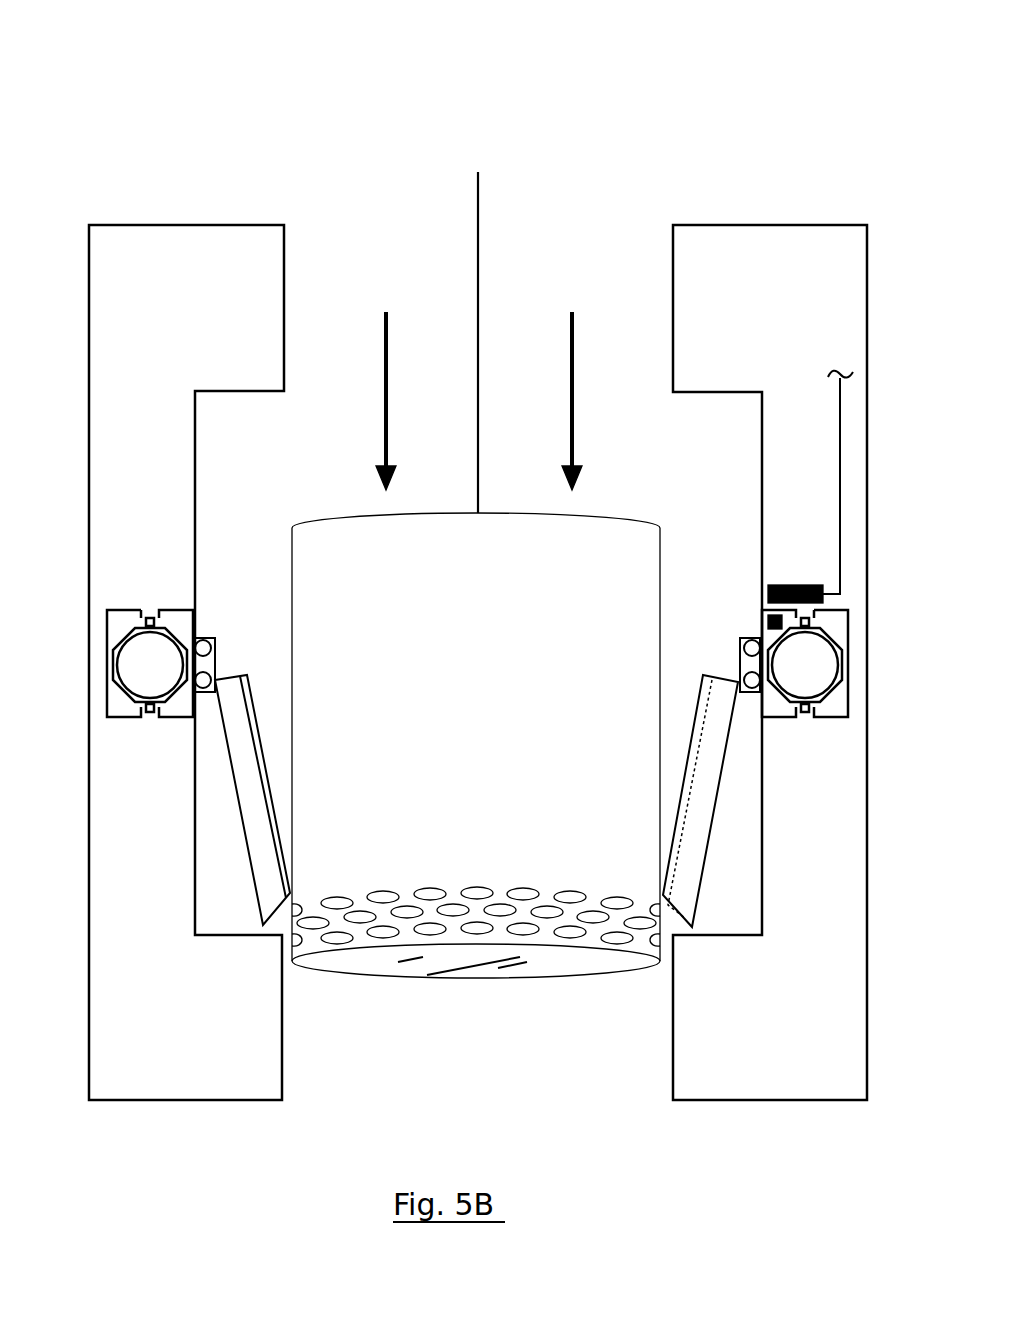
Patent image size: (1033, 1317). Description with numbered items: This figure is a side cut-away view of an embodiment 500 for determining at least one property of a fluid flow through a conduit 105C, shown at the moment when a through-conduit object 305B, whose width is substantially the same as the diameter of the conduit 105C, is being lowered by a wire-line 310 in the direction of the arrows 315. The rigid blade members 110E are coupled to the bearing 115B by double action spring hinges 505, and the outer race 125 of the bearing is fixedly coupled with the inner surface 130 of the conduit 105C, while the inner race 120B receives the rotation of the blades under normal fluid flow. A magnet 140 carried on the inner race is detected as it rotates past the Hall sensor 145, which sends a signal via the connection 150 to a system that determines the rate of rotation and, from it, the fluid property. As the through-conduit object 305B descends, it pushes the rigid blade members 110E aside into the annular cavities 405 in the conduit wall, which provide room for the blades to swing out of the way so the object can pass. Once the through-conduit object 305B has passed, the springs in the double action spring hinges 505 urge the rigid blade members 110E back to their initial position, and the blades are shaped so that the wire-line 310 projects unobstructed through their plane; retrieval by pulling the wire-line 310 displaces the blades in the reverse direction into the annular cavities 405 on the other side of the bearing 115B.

The embodiment 500 is at (162, 85).
The conduit 105C is at (120, 225).
The wire-line 310 is at (478, 240).
The arrows 315 is at (392, 350).
The inner surface 130 is at (672, 330).
The connection 150 is at (840, 400).
The outer race 125 is at (199, 582).
The annular cavities 405 is at (130, 610).
The inner race 120B is at (197, 623).
The double action spring hinges 505 is at (217, 665).
The Hall sensor 145 is at (770, 585).
The magnet 140 is at (770, 612).
The bearing 115B is at (752, 606).
The rigid blade members 110E is at (720, 670).
The through-conduit object 305B is at (476, 979).